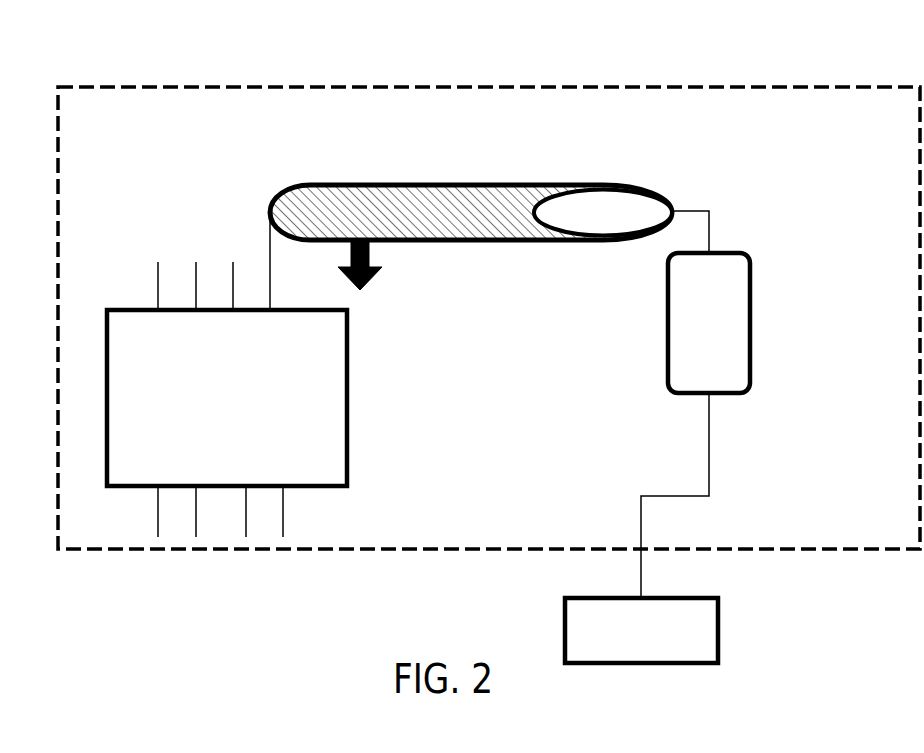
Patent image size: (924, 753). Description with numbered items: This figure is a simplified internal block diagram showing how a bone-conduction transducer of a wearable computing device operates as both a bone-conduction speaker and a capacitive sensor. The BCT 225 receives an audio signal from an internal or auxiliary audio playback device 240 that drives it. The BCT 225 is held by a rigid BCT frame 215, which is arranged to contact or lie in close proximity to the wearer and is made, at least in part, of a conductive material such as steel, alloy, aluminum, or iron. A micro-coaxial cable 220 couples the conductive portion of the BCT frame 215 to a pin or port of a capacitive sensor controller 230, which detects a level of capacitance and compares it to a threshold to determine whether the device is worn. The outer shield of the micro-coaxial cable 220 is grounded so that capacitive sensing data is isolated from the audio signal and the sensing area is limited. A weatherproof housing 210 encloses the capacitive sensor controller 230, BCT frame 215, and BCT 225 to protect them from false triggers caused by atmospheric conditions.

The weatherproof housing 210 is at (490, 86).
The BCT frame 215 is at (733, 253).
The micro-coaxial cable 220 is at (447, 186).
The BCT 225 is at (768, 332).
The capacitive sensor controller 230 is at (349, 368).
The audio playback device 240 is at (718, 632).